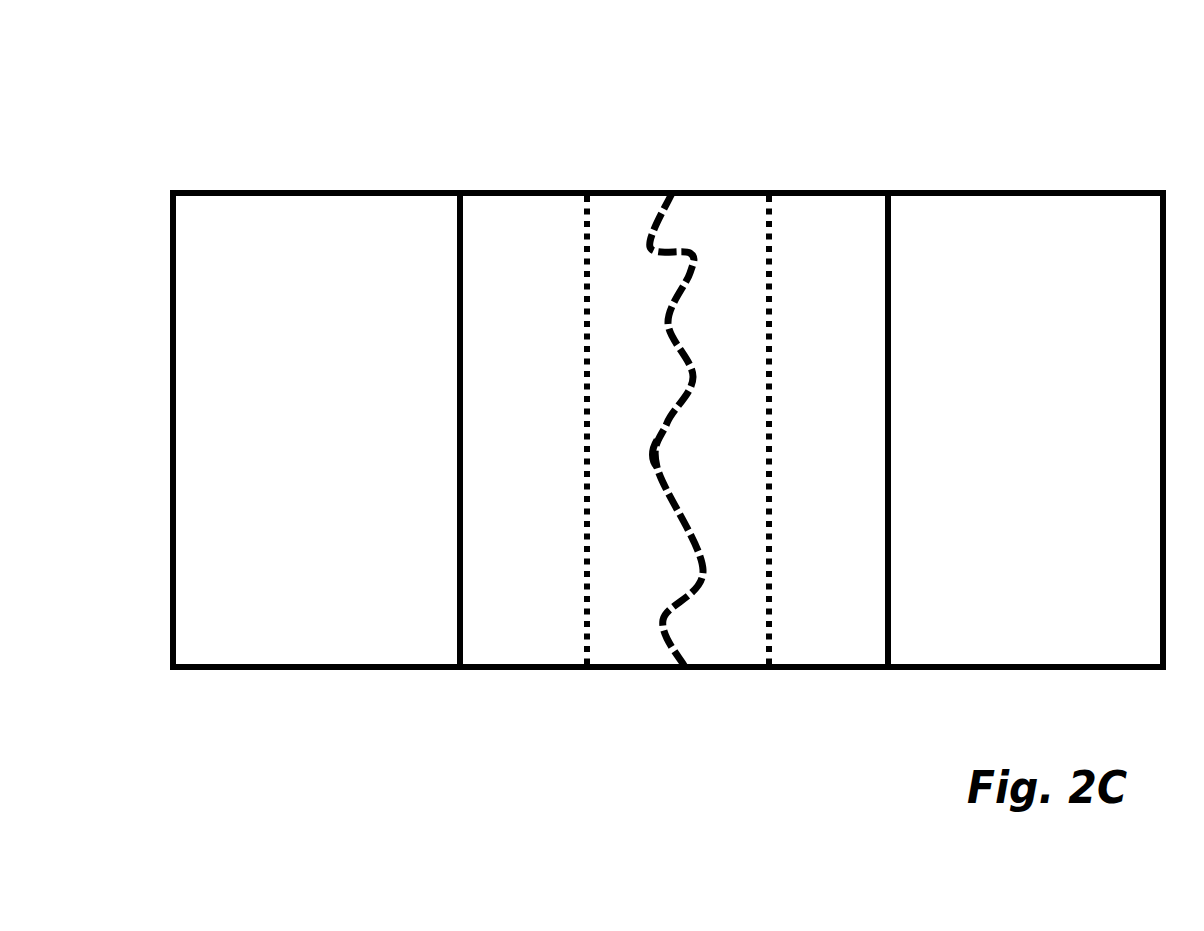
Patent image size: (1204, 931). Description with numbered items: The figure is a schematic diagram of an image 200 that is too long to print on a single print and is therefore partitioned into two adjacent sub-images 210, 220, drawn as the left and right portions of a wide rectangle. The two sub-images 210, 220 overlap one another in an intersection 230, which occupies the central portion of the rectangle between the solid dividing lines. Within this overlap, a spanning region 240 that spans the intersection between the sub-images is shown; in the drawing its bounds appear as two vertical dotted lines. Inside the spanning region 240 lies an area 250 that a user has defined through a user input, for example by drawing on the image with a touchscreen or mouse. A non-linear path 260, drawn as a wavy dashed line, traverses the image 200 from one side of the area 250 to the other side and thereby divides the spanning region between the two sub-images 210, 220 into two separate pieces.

The image 200 is at (232, 145).
The sub-image 210 is at (387, 193).
The sub-image 220 is at (953, 192).
The intersection 230 is at (531, 192).
The spanning region 240 is at (587, 428).
The area 250 is at (673, 193).
The non-linear path 260 is at (660, 453).